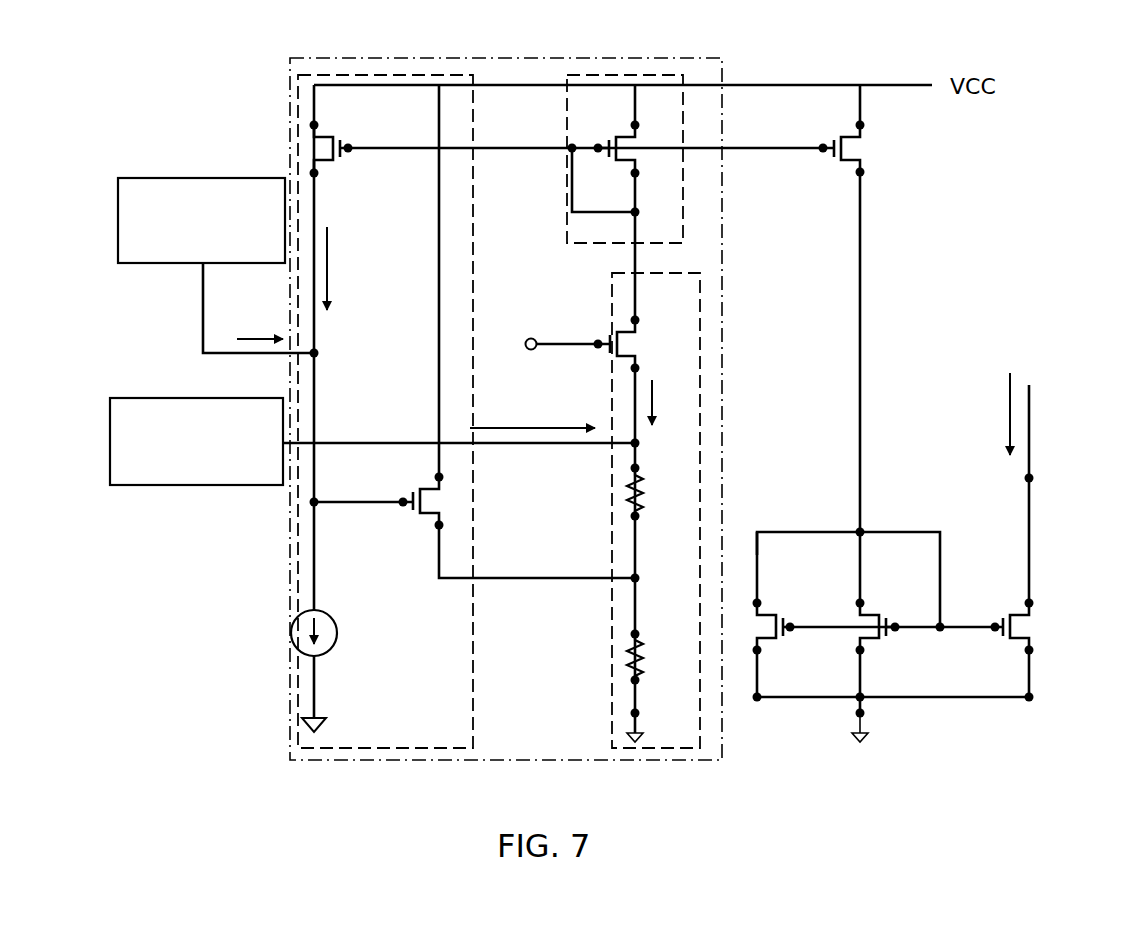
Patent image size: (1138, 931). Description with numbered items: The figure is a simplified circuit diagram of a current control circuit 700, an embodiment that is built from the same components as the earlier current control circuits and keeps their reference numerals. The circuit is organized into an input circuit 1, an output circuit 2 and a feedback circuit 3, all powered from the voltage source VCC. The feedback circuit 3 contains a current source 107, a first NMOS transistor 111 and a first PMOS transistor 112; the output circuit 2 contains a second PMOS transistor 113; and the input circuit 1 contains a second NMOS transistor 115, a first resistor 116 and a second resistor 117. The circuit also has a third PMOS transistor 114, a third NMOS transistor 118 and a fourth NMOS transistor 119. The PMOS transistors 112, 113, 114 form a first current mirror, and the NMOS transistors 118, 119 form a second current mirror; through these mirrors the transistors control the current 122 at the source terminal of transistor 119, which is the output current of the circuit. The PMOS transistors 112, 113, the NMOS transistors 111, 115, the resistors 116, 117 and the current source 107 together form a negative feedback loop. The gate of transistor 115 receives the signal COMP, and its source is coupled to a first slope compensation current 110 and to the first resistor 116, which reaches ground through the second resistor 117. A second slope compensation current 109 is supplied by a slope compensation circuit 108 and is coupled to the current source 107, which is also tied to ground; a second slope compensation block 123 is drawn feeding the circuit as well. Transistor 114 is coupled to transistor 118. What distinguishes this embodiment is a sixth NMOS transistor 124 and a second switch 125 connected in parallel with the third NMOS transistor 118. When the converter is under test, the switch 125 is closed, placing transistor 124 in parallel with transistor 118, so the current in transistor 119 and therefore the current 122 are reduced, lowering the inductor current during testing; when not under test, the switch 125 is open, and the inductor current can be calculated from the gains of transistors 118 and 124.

The input circuit 1 is at (698, 273).
The output circuit 2 is at (678, 75).
The feedback circuit 3 is at (473, 75).
The current source 107 is at (295, 671).
The slope compensation circuit 108 is at (207, 249).
The second slope compensation current 109 is at (260, 322).
The first slope compensation current 110 is at (532, 417).
The first NMOS transistor 111 is at (379, 511).
The first PMOS transistor 112 is at (332, 210).
The second PMOS transistor 113 is at (604, 151).
The third PMOS transistor 114 is at (837, 131).
The second NMOS transistor 115 is at (578, 371).
The first resistor 116 is at (656, 493).
The second resistor 117 is at (656, 658).
The third NMOS transistor 118 is at (878, 636).
The fourth NMOS transistor 119 is at (1009, 636).
The current 122 is at (992, 414).
The slope compensation block 123 is at (367, 427).
The sixth NMOS transistor 124 is at (749, 627).
The second switch 125 is at (732, 553).
The current control circuit 700 is at (1035, 45).